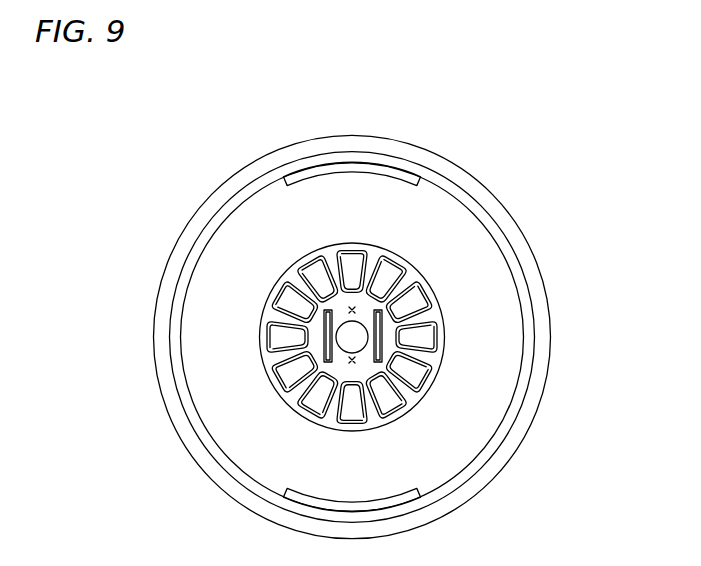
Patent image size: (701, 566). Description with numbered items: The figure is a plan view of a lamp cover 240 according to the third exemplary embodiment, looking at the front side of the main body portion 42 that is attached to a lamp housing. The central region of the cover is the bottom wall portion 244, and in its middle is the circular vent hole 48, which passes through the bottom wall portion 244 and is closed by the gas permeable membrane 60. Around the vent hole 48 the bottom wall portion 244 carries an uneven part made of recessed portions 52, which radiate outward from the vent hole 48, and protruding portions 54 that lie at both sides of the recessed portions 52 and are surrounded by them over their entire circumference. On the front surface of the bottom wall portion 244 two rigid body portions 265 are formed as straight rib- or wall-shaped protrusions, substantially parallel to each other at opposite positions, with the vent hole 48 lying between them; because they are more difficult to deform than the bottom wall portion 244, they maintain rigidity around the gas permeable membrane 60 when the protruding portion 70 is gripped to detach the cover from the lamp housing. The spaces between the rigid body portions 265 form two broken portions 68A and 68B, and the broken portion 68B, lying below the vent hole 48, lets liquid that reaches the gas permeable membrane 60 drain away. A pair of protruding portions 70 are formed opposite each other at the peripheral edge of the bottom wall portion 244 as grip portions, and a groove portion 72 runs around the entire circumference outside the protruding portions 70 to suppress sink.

The lamp cover 240 is at (580, 140).
The main body portion 42 is at (554, 402).
The groove portion 72 is at (220, 212).
The bottom wall portion 244 is at (208, 272).
The protruding portion 70 is at (341, 172).
The gas permeable membrane 60 is at (345, 325).
The recessed portion 52 is at (350, 338).
The protruding portion 54 is at (387, 277).
The vent hole 48 is at (350, 320).
The broken portion 68A is at (358, 310).
The broken portion 68B is at (358, 360).
The rigid body portion 265 is at (343, 362).